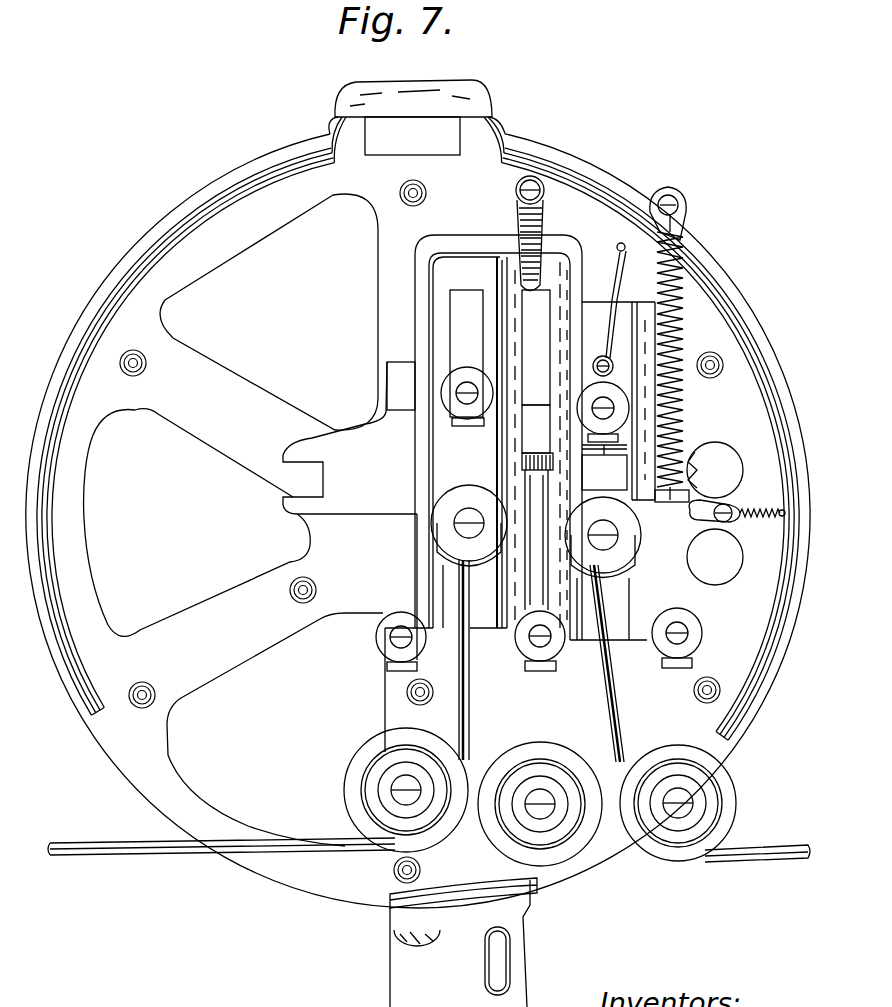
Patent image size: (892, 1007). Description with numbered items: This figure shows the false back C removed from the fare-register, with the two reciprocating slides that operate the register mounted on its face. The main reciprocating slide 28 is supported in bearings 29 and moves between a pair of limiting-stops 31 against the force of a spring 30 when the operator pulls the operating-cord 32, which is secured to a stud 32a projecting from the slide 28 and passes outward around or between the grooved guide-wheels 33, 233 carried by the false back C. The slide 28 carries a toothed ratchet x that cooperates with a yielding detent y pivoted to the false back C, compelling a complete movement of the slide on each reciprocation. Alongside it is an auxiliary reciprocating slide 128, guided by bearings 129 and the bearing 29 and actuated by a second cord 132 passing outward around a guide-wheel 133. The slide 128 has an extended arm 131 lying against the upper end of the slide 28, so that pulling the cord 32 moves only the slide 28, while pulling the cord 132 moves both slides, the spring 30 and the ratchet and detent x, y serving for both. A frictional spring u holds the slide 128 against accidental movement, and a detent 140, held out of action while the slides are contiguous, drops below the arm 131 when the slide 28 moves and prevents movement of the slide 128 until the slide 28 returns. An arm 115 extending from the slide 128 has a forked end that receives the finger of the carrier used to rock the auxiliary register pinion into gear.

The false back C is at (418, 543).
The arm 115 is at (324, 472).
The auxiliary reciprocating slide 128 is at (531, 437).
The extended arm 131 is at (571, 445).
The bearings 129 is at (395, 623).
The frictional spring u is at (541, 218).
The detent 140 is at (597, 283).
The limiting-stops 31 is at (534, 462).
The bearings 29 is at (511, 669).
The reciprocating slide 28 is at (618, 401).
The spring 30 is at (682, 321).
The ratchet x is at (690, 462).
The yielding detent y is at (694, 521).
The second cord 132 is at (472, 725).
The stud 32a is at (605, 539).
The operating-cord 32 is at (604, 698).
The guide-wheel 133 is at (406, 790).
The grooved guide-wheel 233 is at (568, 854).
The grooved guide-wheel 33 is at (678, 801).